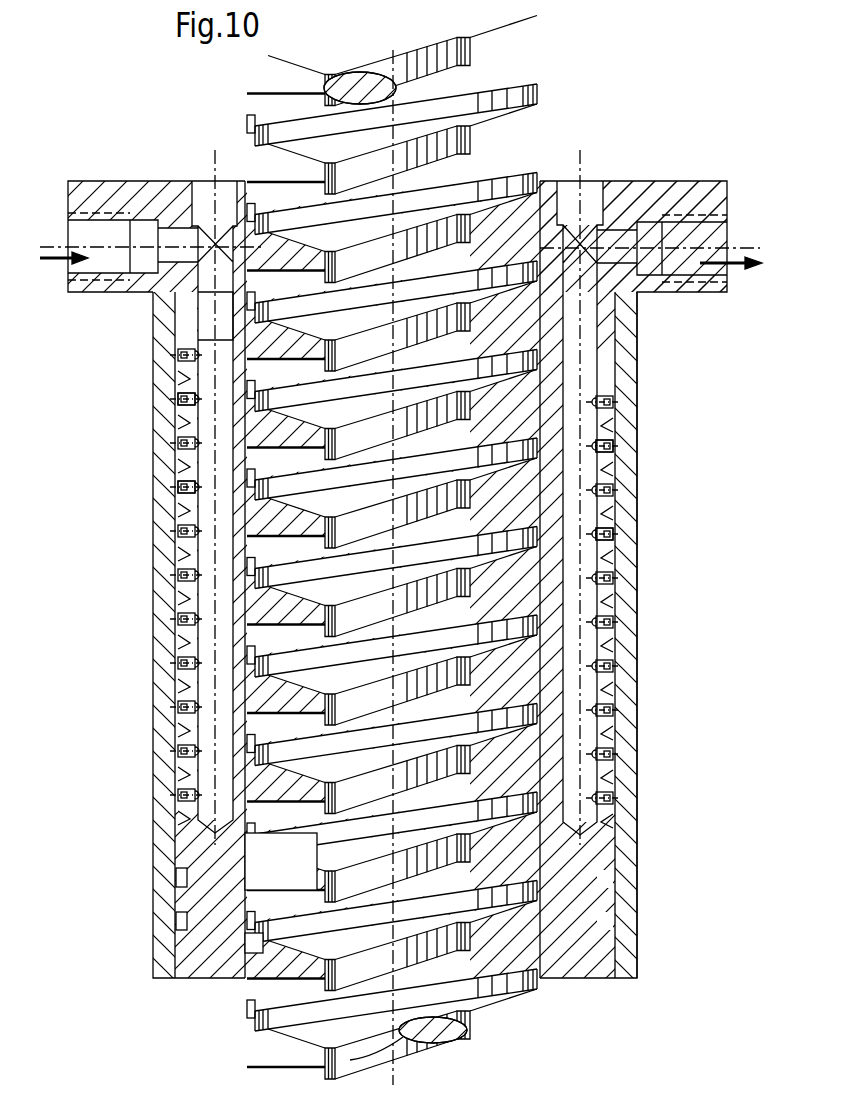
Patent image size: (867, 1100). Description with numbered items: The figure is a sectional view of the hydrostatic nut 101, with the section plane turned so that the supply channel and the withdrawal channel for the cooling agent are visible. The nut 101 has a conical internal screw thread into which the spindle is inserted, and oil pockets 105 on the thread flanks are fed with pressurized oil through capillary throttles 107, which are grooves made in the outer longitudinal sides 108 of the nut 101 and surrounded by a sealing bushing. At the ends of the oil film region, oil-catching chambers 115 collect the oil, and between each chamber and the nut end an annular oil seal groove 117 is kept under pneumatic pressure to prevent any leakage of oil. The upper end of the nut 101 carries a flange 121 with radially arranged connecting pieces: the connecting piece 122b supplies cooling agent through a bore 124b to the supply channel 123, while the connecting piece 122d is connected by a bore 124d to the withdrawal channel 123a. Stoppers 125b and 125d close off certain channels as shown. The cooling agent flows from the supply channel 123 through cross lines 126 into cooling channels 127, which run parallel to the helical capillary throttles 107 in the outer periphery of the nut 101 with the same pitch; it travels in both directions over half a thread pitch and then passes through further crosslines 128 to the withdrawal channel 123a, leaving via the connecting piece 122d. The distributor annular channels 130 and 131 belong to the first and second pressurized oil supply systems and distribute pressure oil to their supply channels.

The hydrostatic nut 101 is at (565, 965).
The oil pockets 105 is at (603, 630).
The capillary throttles 107 is at (178, 600).
The outer longitudinal sides 108 is at (613, 838).
The oil-catching chambers 115 is at (210, 315).
The oil seal groove 117 is at (250, 945).
The flange 121 is at (688, 200).
The connecting piece 122b is at (80, 230).
The connecting piece 122d is at (720, 230).
The supply channel 123 is at (212, 550).
The withdrawal channel 123a is at (608, 402).
The bore 124b is at (205, 225).
The bore 124d is at (602, 222).
The stopper 125b is at (228, 185).
The stopper 125d is at (578, 180).
The cross lines 126 is at (180, 485).
The cooling channels 127 is at (180, 400).
The crosslines 128 is at (612, 536).
The distributor annular channel 130 is at (178, 922).
The distributor annular channel 131 is at (178, 878).